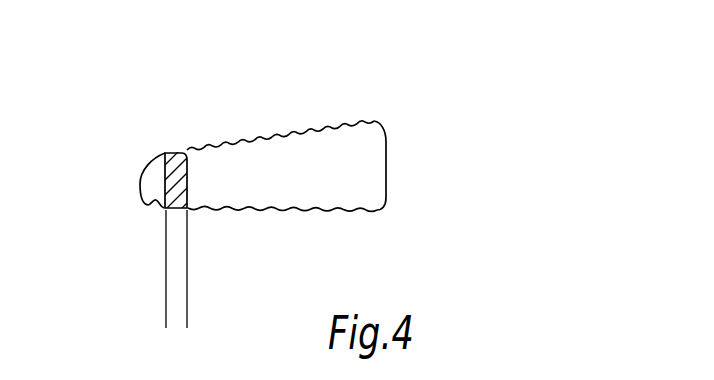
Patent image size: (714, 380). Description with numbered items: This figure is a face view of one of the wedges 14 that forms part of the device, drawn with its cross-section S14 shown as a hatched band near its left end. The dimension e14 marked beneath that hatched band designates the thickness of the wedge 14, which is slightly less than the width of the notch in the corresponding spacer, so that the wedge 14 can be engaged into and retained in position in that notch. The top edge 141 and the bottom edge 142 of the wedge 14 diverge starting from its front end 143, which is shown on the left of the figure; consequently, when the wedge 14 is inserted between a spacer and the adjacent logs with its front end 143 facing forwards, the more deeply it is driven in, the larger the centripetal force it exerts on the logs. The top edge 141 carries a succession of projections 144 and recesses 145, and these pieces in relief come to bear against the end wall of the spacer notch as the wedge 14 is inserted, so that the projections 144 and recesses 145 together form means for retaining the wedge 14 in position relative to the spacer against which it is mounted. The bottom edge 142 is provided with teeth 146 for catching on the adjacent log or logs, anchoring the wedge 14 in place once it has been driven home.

The wedge 14 is at (311, 161).
The top edge 141 is at (383, 114).
The bottom edge 142 is at (384, 217).
The front end 143 is at (150, 196).
The projections 144 is at (238, 137).
The recesses 145 is at (283, 122).
The teeth 146 is at (308, 206).
The cross-section of the wedge S14 is at (165, 152).
The thickness of the wedge e14 is at (110, 317).